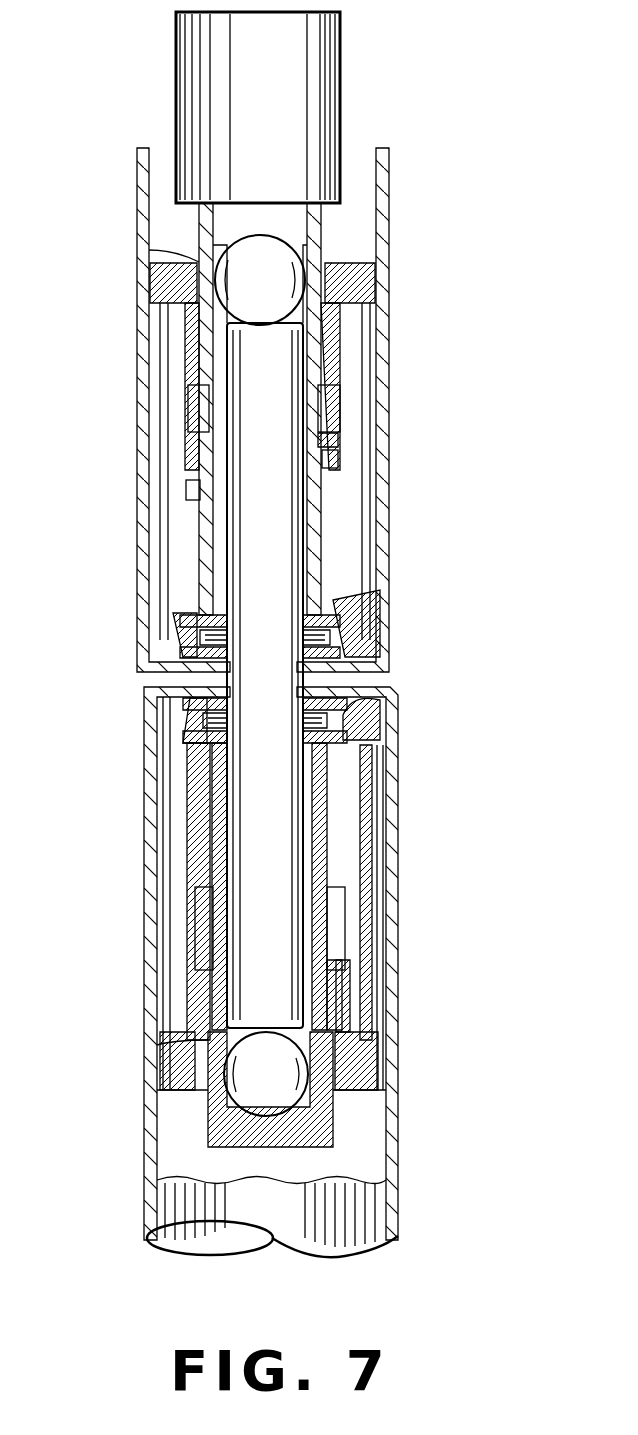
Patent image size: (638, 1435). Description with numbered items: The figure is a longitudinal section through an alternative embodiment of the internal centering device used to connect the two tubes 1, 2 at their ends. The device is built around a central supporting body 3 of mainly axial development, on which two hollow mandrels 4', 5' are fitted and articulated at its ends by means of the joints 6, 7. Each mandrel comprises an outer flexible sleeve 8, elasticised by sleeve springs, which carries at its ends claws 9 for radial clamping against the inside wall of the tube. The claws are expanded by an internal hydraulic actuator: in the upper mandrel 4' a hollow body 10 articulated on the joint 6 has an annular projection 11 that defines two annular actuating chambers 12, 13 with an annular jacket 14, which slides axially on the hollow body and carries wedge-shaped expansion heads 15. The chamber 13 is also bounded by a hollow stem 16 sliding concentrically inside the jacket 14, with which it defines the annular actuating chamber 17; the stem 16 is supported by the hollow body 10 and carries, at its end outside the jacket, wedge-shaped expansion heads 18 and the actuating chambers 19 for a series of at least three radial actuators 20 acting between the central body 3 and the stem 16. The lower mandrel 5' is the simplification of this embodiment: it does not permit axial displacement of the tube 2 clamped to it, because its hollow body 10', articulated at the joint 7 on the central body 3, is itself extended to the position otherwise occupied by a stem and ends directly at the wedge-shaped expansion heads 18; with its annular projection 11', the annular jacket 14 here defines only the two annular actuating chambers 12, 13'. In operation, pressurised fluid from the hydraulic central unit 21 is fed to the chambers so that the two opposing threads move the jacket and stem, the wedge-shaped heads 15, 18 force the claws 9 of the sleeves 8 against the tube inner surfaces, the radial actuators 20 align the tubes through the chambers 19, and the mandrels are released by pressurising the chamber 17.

The tube 1 is at (300, 410).
The tube 2 is at (279, 972).
The central supporting body 3 is at (250, 452).
The hollow mandrel 4' is at (380, 410).
The hollow mandrel 5' is at (383, 963).
The joint 6 is at (290, 292).
The joint 7 is at (290, 1068).
The outer flexible sleeve 8 is at (165, 352).
The claws 9 is at (152, 273).
The hollow body 10 is at (381, 426).
The hollow body 10' is at (183, 891).
The annular projection 11 is at (386, 386).
The annular projection 11' is at (393, 990).
The annular actuating chamber 12 is at (190, 335).
The annular actuating chamber 13 is at (143, 403).
The annular actuating chamber 13' is at (424, 892).
The annular jacket 14 is at (188, 420).
The wedge-shaped expansion heads 15 is at (185, 262).
The hollow stem 16 is at (188, 492).
The annular actuating chamber 17 is at (338, 458).
The wedge-shaped expansion heads 18 is at (180, 620).
The actuating chambers 19 is at (205, 630).
The radial actuators 20 is at (200, 668).
The hydraulic central unit 21 is at (323, 78).